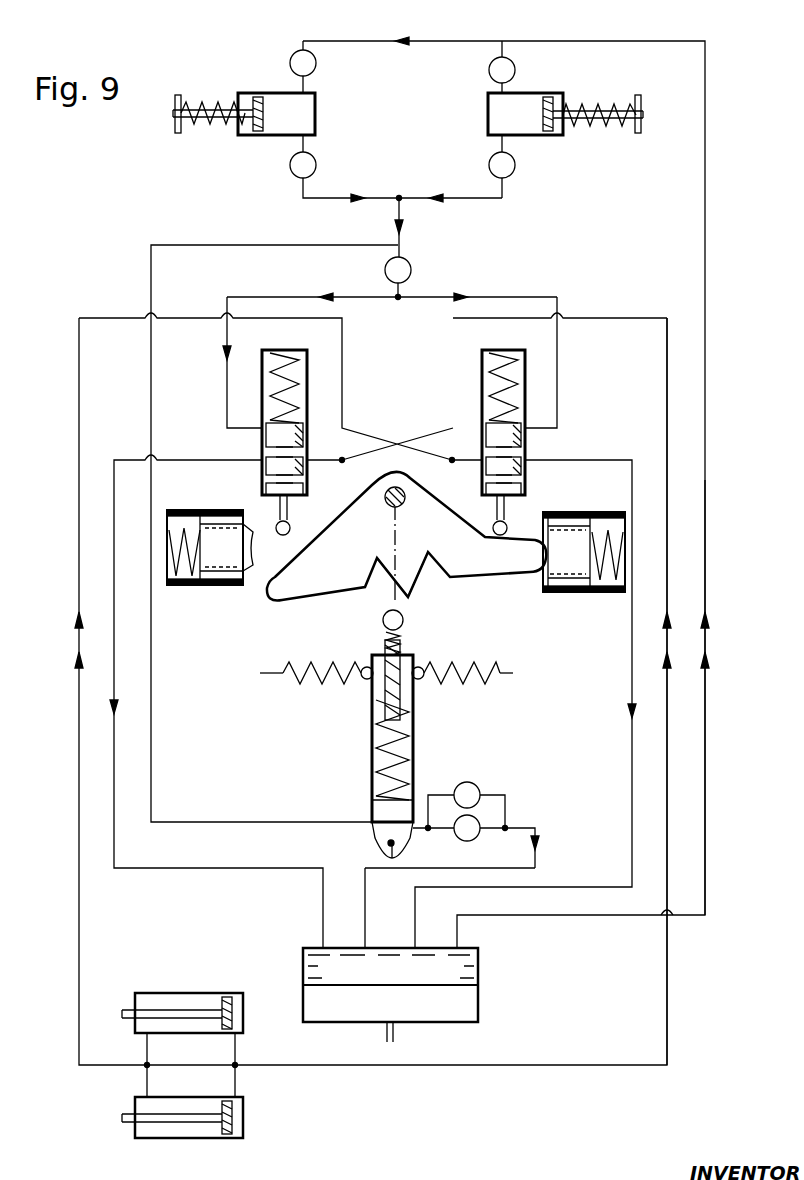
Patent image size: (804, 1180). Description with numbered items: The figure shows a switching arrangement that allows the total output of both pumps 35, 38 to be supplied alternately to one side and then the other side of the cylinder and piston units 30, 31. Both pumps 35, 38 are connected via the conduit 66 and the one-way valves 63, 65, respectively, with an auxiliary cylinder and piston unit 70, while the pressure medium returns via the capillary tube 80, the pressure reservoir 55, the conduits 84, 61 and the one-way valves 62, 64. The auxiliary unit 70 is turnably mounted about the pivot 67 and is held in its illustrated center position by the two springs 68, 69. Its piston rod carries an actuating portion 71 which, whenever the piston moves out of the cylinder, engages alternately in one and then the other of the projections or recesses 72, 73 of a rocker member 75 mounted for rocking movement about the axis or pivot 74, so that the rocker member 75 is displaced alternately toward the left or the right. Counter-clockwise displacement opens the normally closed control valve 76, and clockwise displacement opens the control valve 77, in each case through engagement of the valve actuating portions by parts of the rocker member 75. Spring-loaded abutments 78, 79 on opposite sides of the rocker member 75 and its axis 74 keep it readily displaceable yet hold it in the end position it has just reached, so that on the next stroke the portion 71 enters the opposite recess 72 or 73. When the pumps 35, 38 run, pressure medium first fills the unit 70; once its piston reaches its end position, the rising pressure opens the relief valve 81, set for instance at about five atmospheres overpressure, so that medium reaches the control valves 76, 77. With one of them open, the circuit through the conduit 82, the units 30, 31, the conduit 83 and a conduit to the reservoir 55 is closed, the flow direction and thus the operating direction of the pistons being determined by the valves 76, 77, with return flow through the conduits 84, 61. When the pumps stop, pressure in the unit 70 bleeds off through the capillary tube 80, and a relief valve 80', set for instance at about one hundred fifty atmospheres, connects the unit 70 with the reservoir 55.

The unit 30 is at (148, 1108).
The unit 31 is at (192, 1005).
The pump 35 is at (272, 135).
The pump 38 is at (537, 140).
The pressure reservoir 55 is at (478, 972).
The conduit 61 is at (330, 41).
The one-way valve 62 is at (293, 55).
The one-way valve 63 is at (294, 178).
The one-way valve 64 is at (514, 68).
The one-way valve 65 is at (510, 178).
The conduit 66 is at (151, 266).
The pivot 67 is at (375, 845).
The spring 68 is at (328, 668).
The spring 69 is at (478, 680).
The auxiliary cylinder and piston unit 70 is at (372, 760).
The actuating portion 71 is at (404, 624).
The projection or recess 72 is at (390, 576).
The projection or recess 73 is at (420, 580).
The axis or pivot 74 is at (395, 487).
The rocker member 75 is at (355, 558).
The control valve 76 is at (505, 437).
The control valve 77 is at (290, 433).
The spring-loaded abutment 78 is at (560, 592).
The spring-loaded abutment 79 is at (220, 562).
The capillary tube 80 is at (482, 841).
The relief valve 80' is at (459, 785).
The relief valve 81 is at (410, 263).
The conduit 82 is at (79, 541).
The conduit 83 is at (668, 349).
The conduit 84 is at (705, 505).